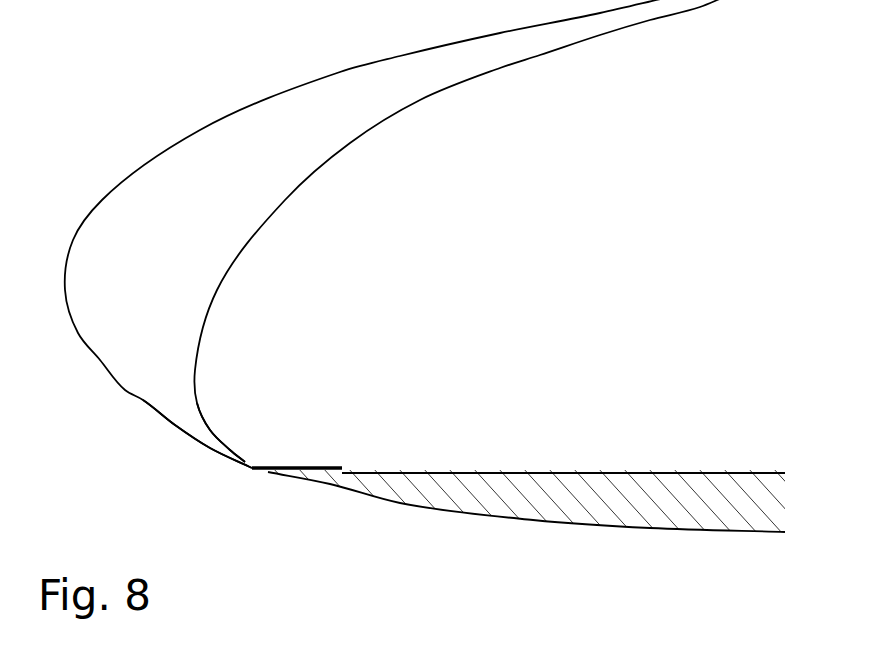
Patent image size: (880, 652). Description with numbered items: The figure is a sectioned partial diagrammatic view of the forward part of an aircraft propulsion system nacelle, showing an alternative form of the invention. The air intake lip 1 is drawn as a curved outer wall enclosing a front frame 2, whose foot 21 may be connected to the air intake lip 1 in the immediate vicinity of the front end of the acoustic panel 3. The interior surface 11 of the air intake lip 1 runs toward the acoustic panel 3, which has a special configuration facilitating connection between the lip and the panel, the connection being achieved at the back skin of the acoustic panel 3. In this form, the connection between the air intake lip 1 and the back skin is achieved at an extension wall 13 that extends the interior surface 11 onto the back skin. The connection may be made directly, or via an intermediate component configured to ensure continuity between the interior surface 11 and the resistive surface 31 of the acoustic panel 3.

The air intake lip 1 is at (177, 137).
The front frame 2 is at (261, 229).
The interior surface 11 is at (197, 450).
The foot 21 is at (235, 442).
The extension wall 13 is at (316, 457).
The acoustic panel 3 is at (585, 470).
The resistive surface 31 is at (540, 526).